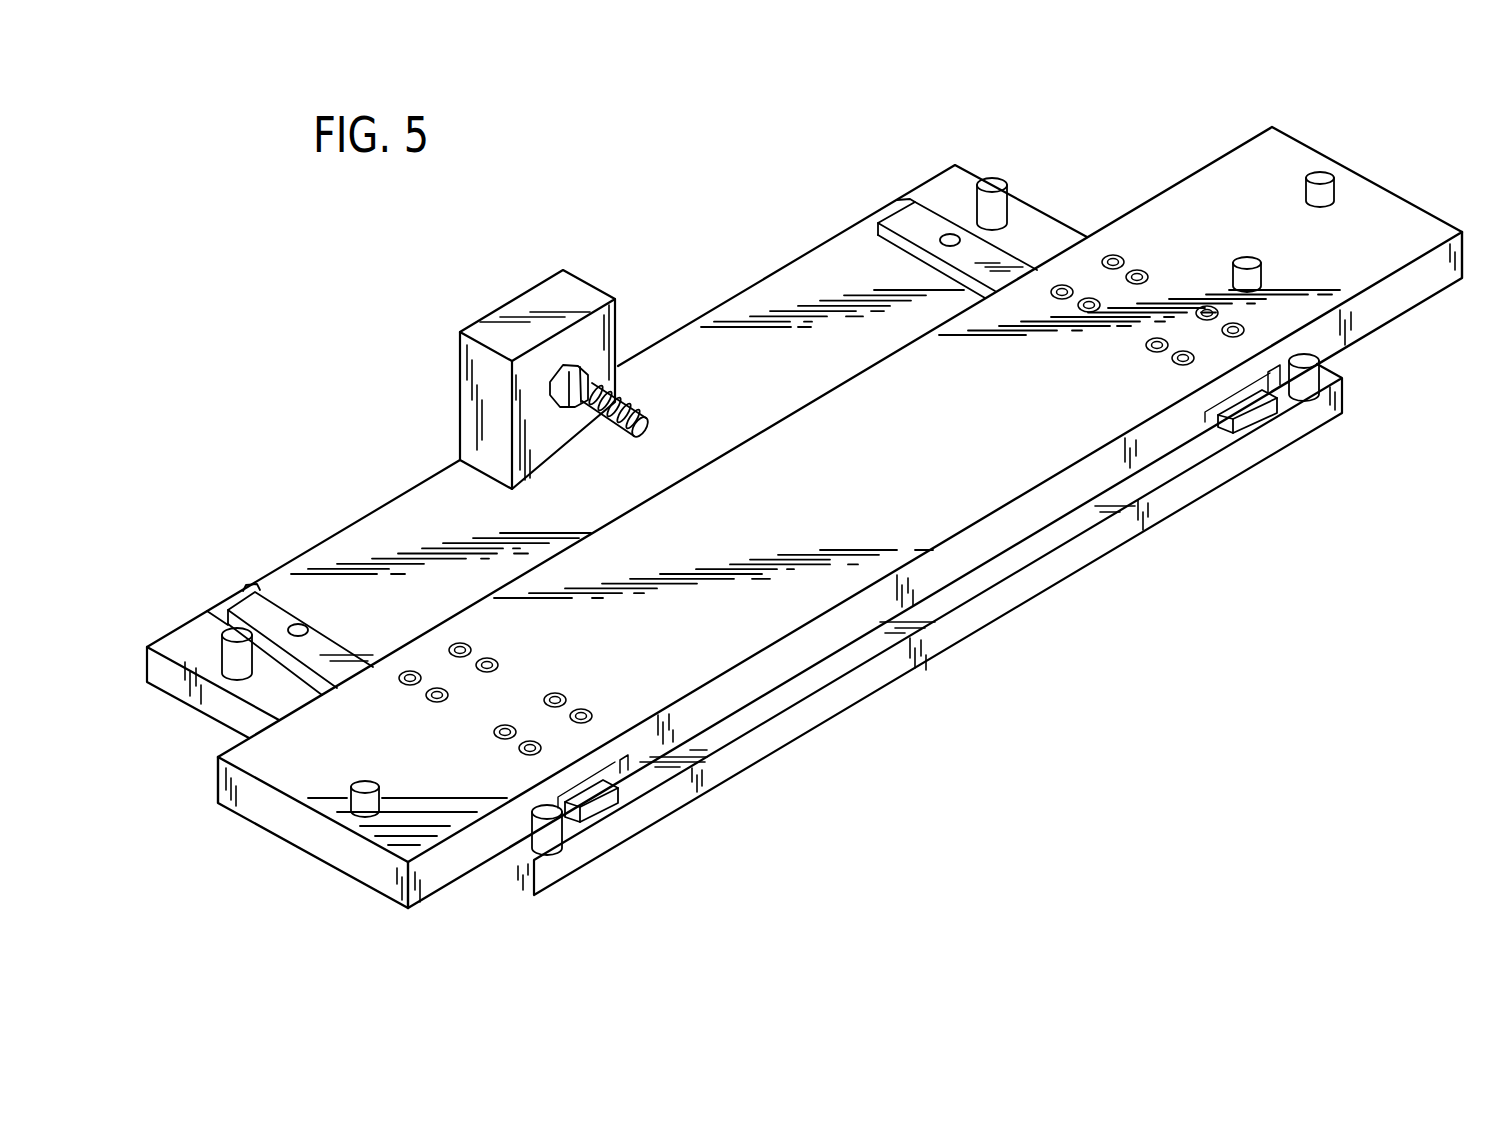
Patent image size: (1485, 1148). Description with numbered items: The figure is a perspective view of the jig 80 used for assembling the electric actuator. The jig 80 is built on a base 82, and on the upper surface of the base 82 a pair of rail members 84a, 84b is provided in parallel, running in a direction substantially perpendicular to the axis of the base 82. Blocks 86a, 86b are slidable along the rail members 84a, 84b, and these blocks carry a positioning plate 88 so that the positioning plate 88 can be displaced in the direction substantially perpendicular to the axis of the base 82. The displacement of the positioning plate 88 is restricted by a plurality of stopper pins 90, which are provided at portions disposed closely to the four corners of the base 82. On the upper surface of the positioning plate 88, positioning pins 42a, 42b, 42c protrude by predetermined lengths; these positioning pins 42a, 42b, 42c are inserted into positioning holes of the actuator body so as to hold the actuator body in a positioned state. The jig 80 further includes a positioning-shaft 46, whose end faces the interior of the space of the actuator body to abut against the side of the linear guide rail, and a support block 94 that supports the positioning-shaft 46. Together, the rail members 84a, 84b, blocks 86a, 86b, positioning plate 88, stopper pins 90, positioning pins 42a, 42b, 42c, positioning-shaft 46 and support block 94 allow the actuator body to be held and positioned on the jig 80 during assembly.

The jig 80 is at (752, 138).
The base 82 is at (395, 540).
The rail member 84a is at (262, 603).
The rail member 84b is at (922, 213).
The block 86a is at (613, 777).
The block 86b is at (1258, 393).
The positioning plate 88 is at (948, 517).
The stopper pin 90 is at (225, 650).
The positioning pin 42a is at (368, 790).
The positioning pin 42b is at (1248, 262).
The positioning pin 42c is at (1320, 185).
The positioning-shaft 46 is at (630, 398).
The support block 94 is at (540, 300).